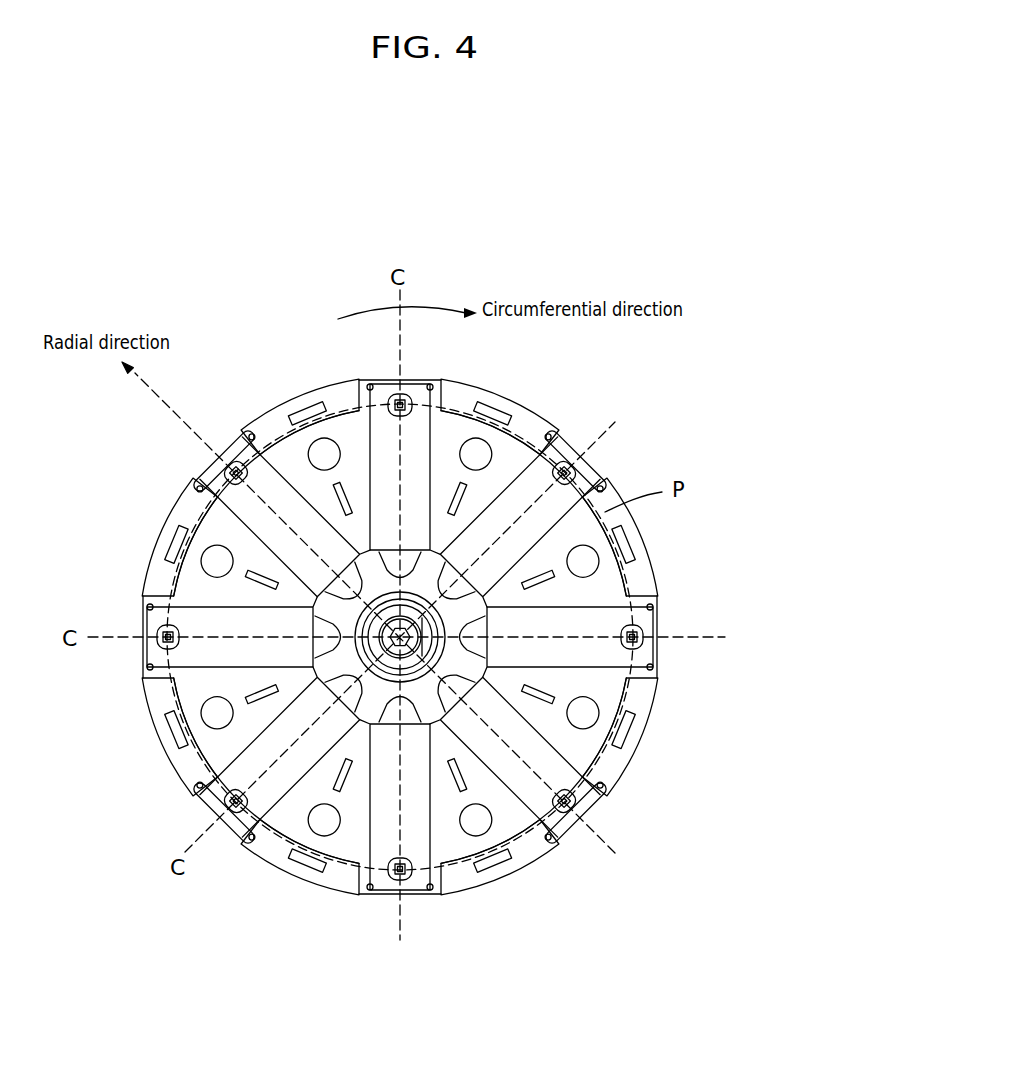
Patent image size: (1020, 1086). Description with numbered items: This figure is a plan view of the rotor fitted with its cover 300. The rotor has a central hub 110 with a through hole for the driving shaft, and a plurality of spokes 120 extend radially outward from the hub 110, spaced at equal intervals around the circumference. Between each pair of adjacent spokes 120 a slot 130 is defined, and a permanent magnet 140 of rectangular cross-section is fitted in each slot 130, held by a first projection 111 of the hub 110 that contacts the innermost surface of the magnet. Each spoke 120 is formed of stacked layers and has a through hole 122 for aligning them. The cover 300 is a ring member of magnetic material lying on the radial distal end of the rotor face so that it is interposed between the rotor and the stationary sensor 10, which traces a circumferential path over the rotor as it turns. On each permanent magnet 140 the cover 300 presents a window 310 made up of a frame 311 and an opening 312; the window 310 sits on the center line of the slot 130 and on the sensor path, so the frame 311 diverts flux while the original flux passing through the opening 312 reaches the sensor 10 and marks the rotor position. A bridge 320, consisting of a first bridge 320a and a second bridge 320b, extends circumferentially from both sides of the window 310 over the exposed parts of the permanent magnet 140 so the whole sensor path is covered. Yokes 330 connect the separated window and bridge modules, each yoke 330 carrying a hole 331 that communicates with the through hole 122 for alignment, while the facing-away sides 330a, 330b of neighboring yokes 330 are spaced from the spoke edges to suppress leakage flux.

The sensor 10 is at (461, 632).
The hub 110 is at (588, 778).
The first projection 111 is at (356, 722).
The spoke 120 is at (517, 820).
The through hole 122 is at (238, 840).
The slot 130 is at (462, 403).
The permanent magnet 140 is at (408, 402).
The cover 300 is at (461, 647).
The window 310 is at (456, 619).
The frame 311 is at (580, 438).
The opening 312 is at (590, 455).
The bridge 320 is at (491, 637).
The first bridge 320a is at (635, 613).
The second bridge 320b is at (635, 660).
The yoke 330 is at (435, 607).
The side of yoke 330a is at (240, 433).
The side of yoke 330b is at (367, 383).
The hole 331 is at (400, 637).